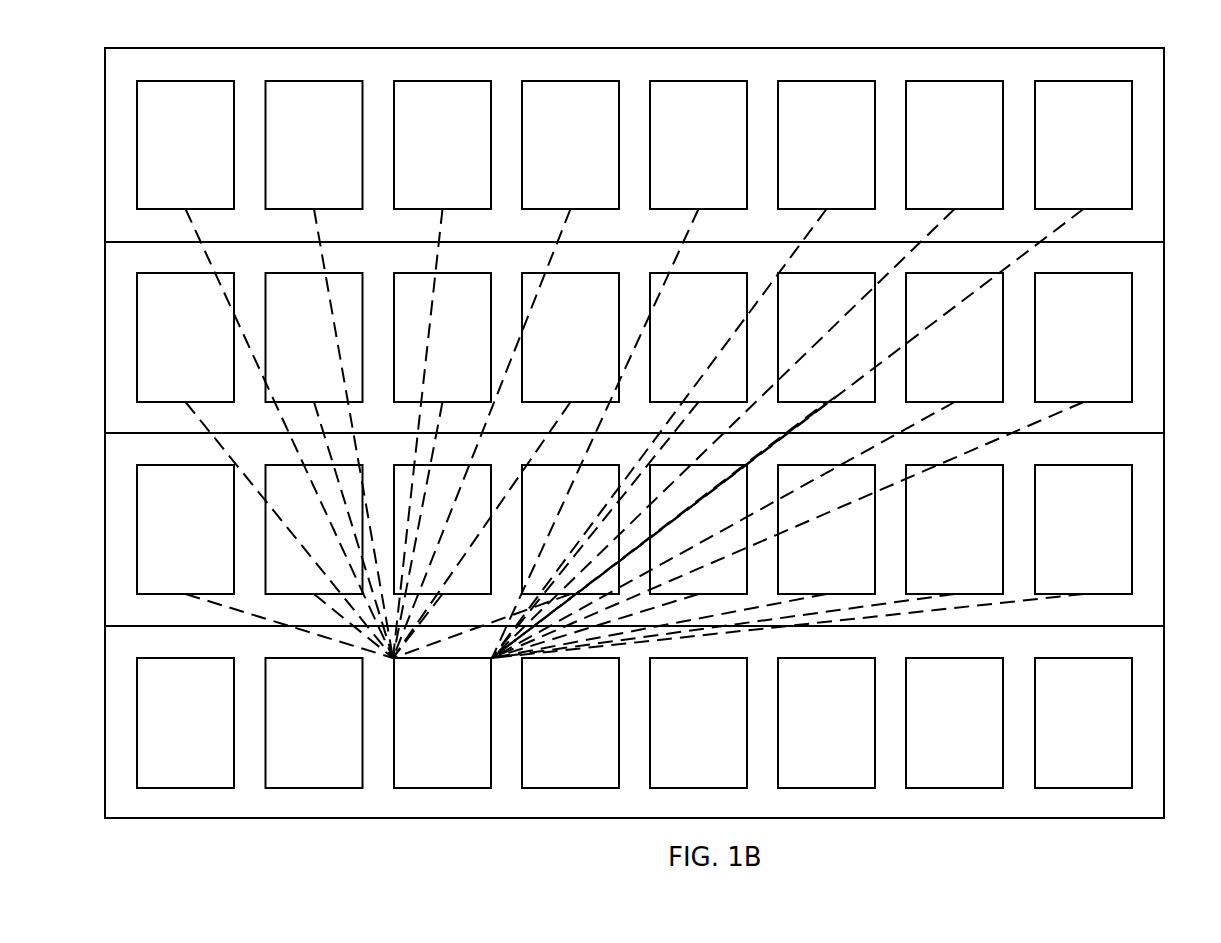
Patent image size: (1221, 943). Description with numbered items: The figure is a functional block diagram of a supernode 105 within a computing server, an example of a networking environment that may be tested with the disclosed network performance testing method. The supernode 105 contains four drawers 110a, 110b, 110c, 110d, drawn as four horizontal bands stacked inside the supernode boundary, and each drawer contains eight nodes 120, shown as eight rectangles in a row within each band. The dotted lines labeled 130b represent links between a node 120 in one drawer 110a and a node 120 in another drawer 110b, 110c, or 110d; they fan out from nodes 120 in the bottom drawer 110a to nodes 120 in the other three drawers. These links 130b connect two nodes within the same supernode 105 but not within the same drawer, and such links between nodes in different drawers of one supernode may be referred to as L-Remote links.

The supernode 105 is at (652, 48).
The drawer 110a is at (679, 723).
The drawer 110b is at (1164, 528).
The drawer 110c is at (1164, 335).
The drawer 110d is at (1164, 145).
The node 120 is at (634, 723).
The links 130b is at (1008, 268).